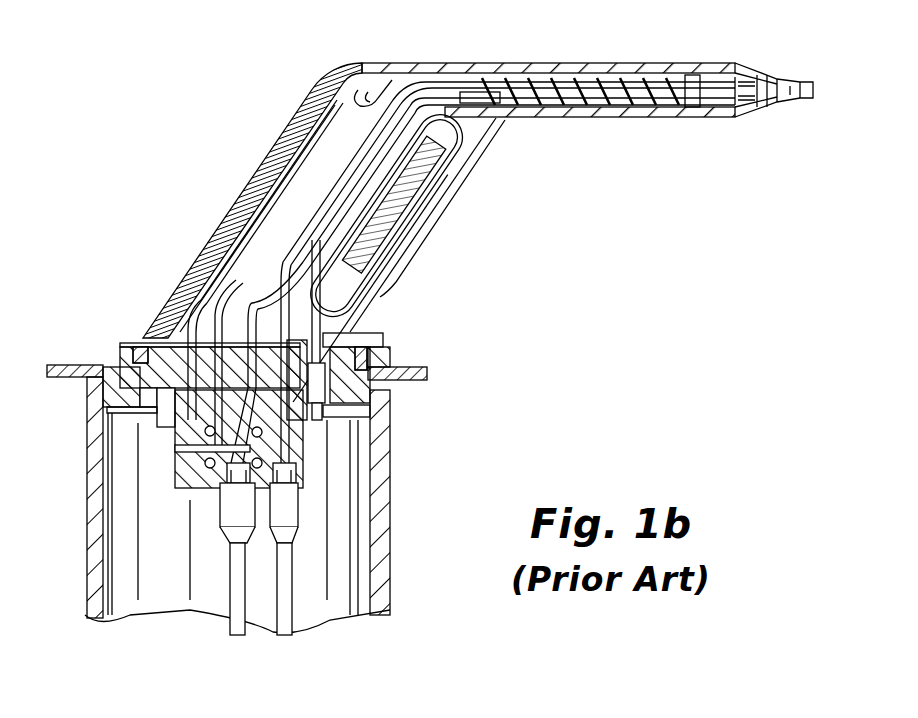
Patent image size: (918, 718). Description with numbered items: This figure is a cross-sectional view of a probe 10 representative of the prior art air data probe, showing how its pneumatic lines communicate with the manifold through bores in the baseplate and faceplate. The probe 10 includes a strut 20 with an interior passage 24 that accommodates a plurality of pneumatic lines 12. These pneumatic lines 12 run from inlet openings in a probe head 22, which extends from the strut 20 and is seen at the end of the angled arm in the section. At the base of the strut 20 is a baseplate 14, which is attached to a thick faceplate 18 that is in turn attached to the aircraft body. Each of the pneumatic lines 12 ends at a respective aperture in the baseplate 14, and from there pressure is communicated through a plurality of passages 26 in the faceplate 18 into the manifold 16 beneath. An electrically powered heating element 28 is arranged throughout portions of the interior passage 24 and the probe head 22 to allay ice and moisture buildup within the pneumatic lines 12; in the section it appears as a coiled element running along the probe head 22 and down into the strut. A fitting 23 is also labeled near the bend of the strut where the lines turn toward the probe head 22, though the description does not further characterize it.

The probe 10 is at (527, 284).
The pneumatic lines 12 is at (288, 233).
The baseplate 14 is at (373, 332).
The manifold 16 is at (173, 473).
The faceplate 18 is at (387, 353).
The strut 20 is at (473, 178).
The probe head 22 is at (683, 63).
The fitting 23 is at (333, 90).
The interior passage 24 is at (295, 197).
The passages 26 is at (190, 330).
The heating element 28 is at (487, 120).